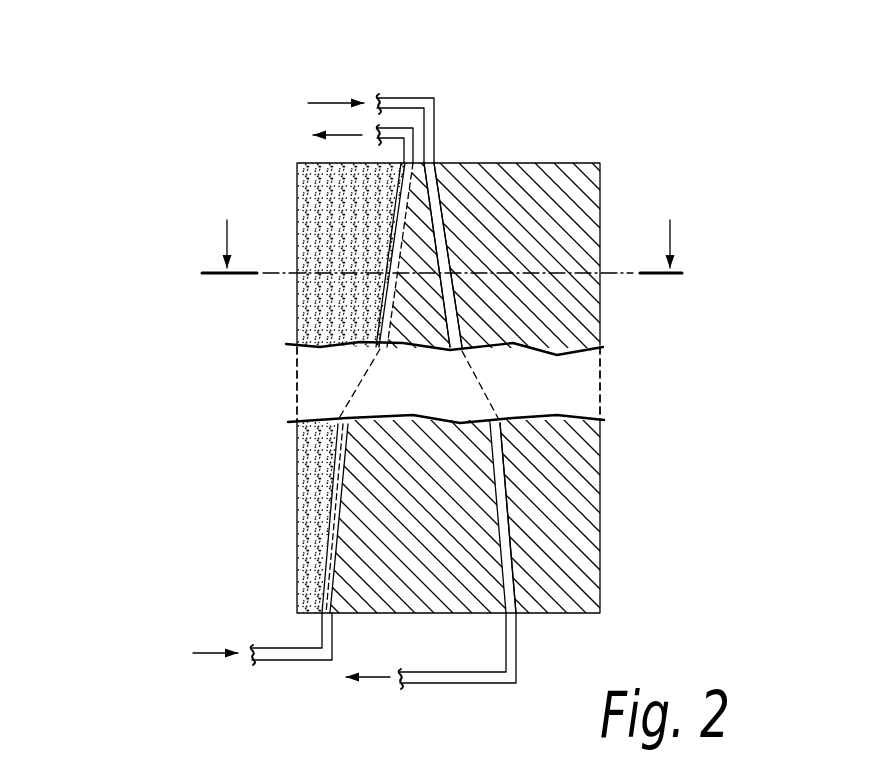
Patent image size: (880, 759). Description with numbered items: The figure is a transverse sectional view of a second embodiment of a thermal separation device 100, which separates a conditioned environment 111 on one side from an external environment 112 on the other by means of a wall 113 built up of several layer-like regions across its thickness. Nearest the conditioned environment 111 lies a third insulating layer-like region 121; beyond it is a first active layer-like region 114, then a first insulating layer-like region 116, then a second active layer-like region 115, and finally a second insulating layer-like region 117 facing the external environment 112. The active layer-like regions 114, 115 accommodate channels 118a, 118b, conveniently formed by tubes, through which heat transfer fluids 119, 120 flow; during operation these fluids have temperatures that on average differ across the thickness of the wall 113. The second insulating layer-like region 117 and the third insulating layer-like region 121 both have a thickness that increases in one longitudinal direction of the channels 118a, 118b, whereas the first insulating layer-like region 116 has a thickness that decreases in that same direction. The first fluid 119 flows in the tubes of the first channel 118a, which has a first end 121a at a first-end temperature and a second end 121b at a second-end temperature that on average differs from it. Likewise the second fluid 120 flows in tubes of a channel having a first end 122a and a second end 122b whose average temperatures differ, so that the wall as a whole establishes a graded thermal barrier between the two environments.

The thermal separation device 100 is at (440, 385).
The conditioned environment 111 is at (263, 395).
The external environment 112 is at (686, 395).
The wall 113 is at (606, 178).
The first active layer-like region 114 is at (372, 306).
The second active layer-like region 115 is at (517, 523).
The first insulating layer-like region 116 is at (441, 572).
The second insulating layer-like region 117 is at (573, 177).
The first channel 118a is at (387, 222).
The second channel 118b is at (444, 187).
The first heat transfer fluid 119 is at (297, 453).
The second heat transfer fluid 120 is at (438, 205).
The third insulating layer-like region 121 is at (311, 519).
The first end 121a is at (320, 614).
The second end 121b is at (400, 183).
The first end 122a is at (522, 613).
The second end 122b is at (437, 162).